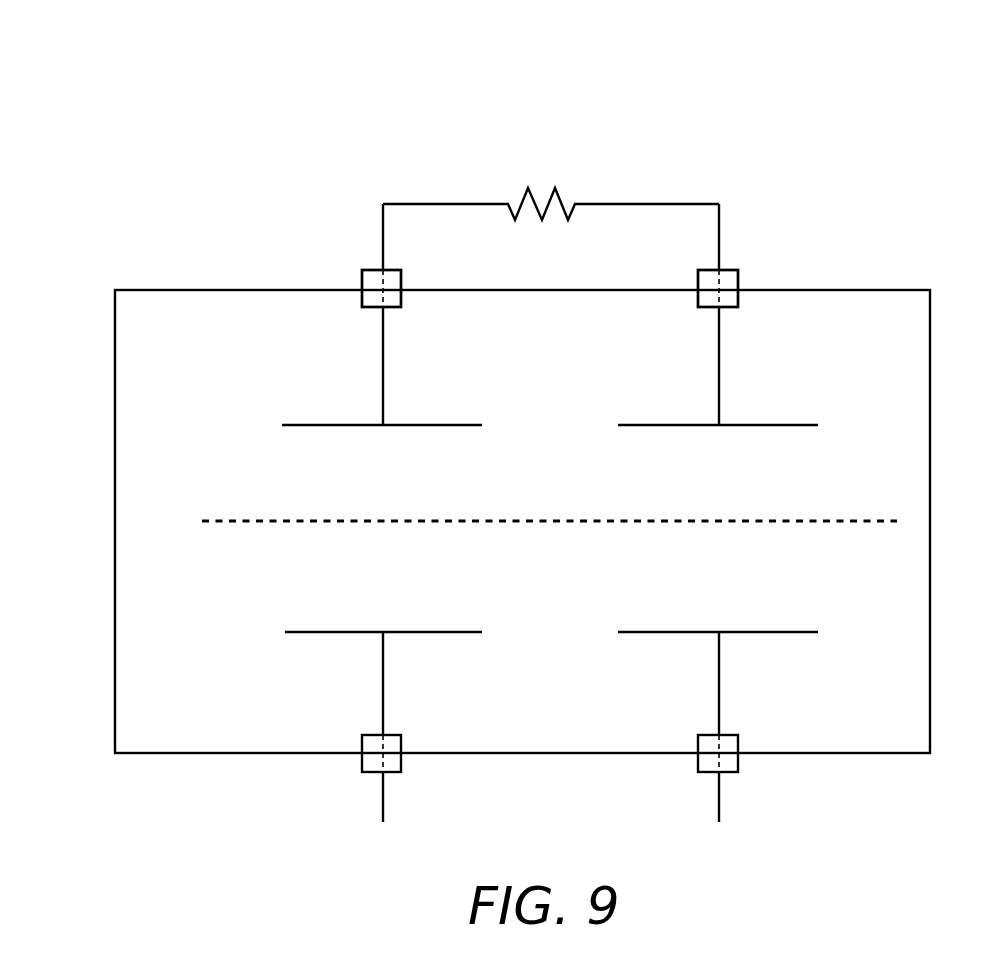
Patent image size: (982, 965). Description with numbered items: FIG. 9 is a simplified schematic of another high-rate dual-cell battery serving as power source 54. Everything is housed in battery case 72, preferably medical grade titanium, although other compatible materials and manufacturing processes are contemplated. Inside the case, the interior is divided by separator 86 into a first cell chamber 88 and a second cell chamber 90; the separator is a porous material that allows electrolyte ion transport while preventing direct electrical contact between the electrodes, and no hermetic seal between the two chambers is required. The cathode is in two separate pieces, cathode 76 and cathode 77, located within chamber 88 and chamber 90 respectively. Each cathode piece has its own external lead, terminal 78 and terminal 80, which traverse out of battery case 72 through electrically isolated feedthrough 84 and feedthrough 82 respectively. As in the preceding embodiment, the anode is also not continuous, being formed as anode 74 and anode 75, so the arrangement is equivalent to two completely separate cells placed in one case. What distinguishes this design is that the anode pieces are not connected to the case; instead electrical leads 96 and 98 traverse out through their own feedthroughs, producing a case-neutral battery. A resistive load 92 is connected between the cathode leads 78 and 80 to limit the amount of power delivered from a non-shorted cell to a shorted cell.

The power source 54 is at (747, 62).
The battery case 72 is at (112, 351).
The anode 74 is at (420, 637).
The anode 75 is at (678, 637).
The cathode 76 is at (425, 420).
The cathode 77 is at (660, 420).
The terminal 78 is at (382, 248).
The terminal 80 is at (720, 220).
The feedthrough 82 is at (752, 277).
The feedthrough 84 is at (408, 275).
The separator 86 is at (688, 519).
The first cell chamber 88 is at (567, 486).
The second cell chamber 90 is at (567, 580).
The resistive load 92 is at (555, 188).
The electrical lead 96 is at (384, 790).
The electrical lead 98 is at (720, 790).